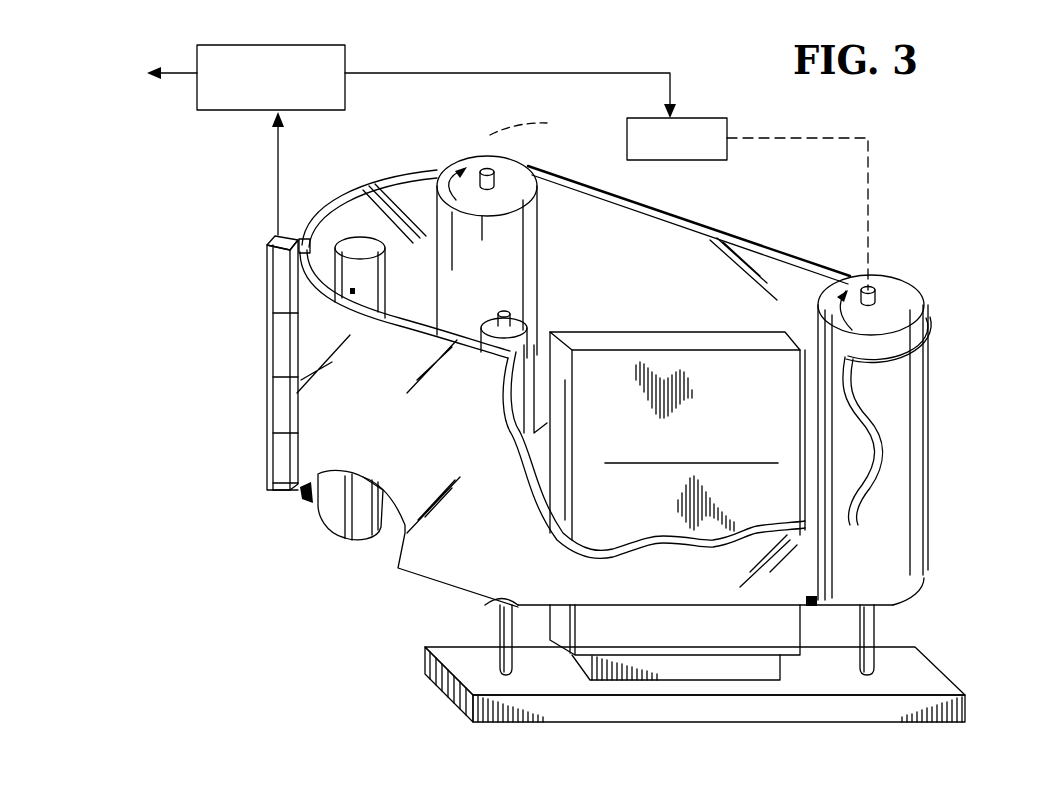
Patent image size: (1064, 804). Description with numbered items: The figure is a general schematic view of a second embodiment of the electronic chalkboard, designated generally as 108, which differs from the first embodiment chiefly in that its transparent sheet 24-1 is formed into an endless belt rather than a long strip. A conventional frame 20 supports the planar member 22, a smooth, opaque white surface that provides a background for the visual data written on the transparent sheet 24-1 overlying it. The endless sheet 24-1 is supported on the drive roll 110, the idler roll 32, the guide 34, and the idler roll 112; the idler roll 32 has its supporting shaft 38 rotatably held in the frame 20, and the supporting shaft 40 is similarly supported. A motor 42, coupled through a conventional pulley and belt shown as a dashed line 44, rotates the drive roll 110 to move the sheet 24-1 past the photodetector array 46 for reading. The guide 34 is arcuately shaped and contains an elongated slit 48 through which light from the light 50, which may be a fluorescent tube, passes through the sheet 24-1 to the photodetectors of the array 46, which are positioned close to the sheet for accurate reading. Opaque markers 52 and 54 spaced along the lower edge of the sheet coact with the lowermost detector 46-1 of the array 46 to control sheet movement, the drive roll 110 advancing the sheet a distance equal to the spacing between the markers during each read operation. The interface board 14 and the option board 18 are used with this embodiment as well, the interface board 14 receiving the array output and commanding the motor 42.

The interface board 14 is at (345, 62).
The option board 18 is at (112, 76).
The motor 42 is at (698, 120).
The pulley and belt 44 is at (535, 125).
The supporting shaft 40 is at (497, 184).
The idler roll 112 is at (563, 255).
The light 50 is at (377, 294).
The slit 48 is at (306, 244).
The photodetector array 46 is at (169, 301).
The lowermost detector 46-1 is at (273, 485).
The idler roll 32 is at (517, 323).
The drive roll 110 is at (908, 295).
The transparent sheet 24-1 is at (463, 586).
The opaque marker 52 is at (303, 497).
The guide 34 is at (323, 512).
The opaque marker 54 is at (822, 630).
The planar member 22 is at (698, 638).
The supporting shaft 38 is at (500, 640).
The frame 20 is at (803, 713).
The electronic chalkboard 108 is at (541, 436).